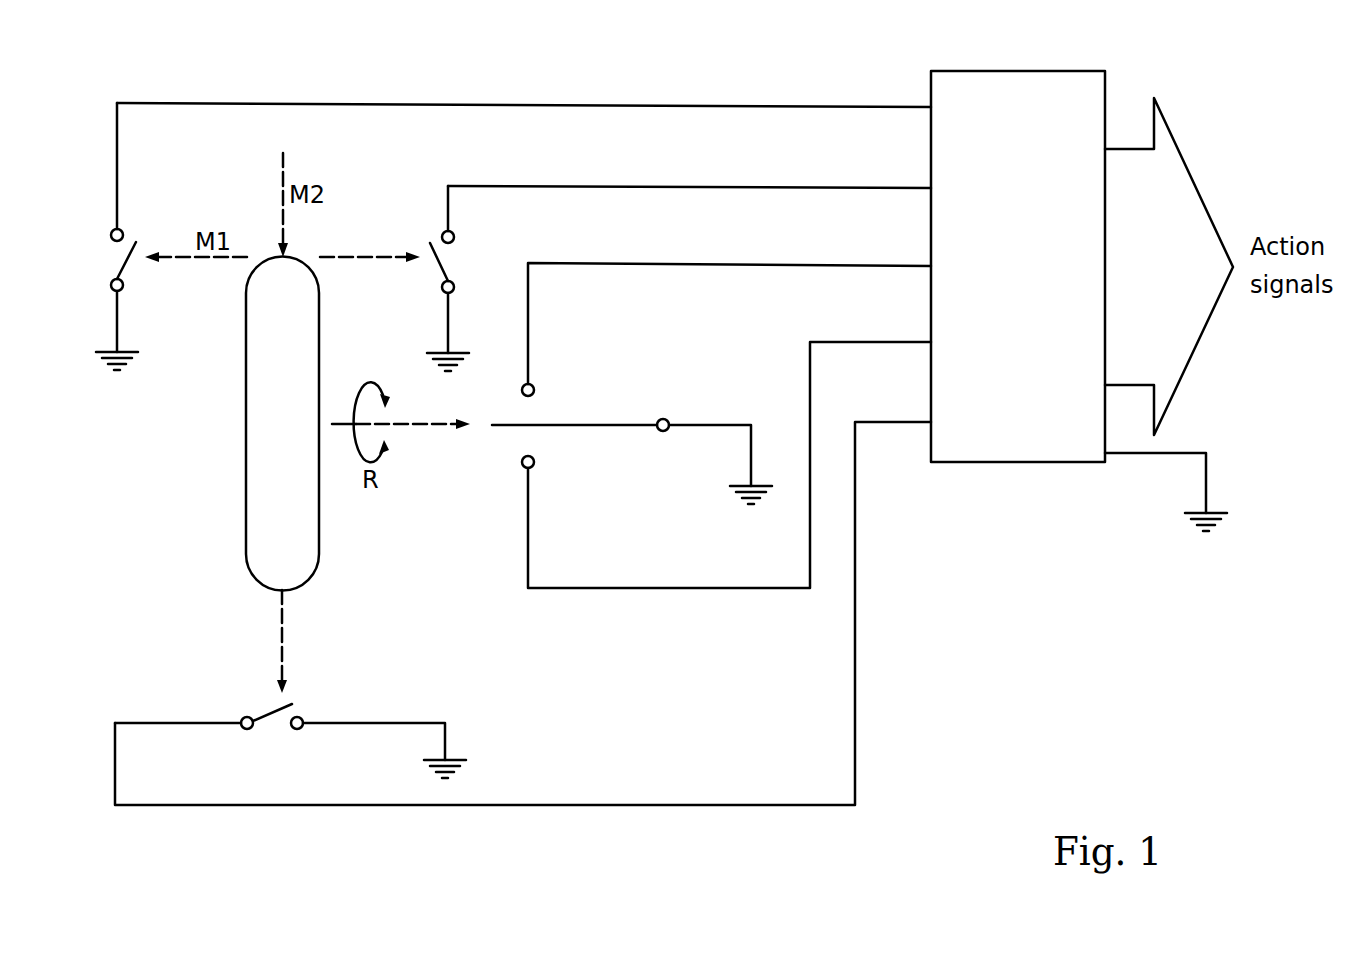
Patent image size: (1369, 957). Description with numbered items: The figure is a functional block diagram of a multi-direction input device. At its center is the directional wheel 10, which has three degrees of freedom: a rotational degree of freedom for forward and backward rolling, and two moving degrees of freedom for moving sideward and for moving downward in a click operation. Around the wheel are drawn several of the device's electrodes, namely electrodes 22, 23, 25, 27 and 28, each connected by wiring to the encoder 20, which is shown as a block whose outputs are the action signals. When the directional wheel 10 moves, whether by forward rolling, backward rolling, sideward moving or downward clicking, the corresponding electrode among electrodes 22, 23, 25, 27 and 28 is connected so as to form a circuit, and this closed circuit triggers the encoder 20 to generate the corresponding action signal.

The directional wheel 10 is at (242, 477).
The encoder 20 is at (1025, 447).
The electrode 22 is at (290, 728).
The electrode 23 is at (470, 278).
The electrode 25 is at (726, 334).
The electrode 27 is at (726, 465).
The electrode 28 is at (163, 236).